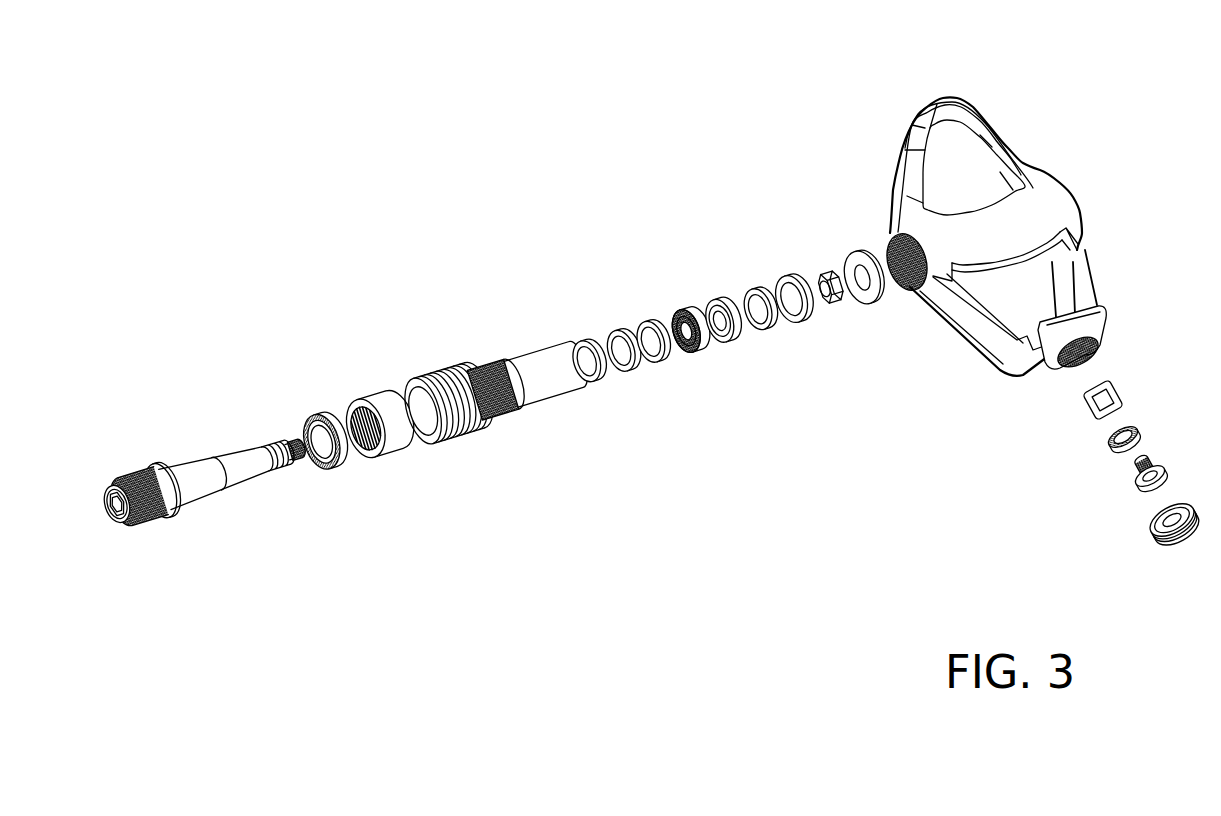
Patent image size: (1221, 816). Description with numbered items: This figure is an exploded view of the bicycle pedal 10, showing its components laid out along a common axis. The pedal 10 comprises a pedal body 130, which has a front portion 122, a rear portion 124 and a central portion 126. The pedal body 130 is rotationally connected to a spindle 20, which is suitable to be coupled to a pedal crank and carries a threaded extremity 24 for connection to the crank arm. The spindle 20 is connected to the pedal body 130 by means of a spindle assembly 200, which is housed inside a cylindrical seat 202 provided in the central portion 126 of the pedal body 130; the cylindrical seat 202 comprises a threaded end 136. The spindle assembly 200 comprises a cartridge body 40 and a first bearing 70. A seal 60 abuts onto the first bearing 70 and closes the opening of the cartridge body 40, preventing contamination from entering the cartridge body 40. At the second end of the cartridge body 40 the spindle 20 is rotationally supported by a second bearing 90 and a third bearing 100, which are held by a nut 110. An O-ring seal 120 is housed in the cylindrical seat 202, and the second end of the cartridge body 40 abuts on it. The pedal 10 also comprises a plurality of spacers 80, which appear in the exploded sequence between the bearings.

The bicycle pedal 10 is at (1003, 290).
The spindle 20 is at (247, 468).
The threaded extremity 24 is at (150, 470).
The cartridge body 40 is at (530, 380).
The seal 60 is at (328, 468).
The first bearing 70 is at (397, 437).
The spacers 80 is at (620, 330).
The second bearing 90 is at (693, 357).
The third bearing 100 is at (727, 292).
The nut 110 is at (833, 307).
The O-ring seal 120 is at (863, 303).
The front portion 122 is at (955, 105).
The rear portion 124 is at (1113, 323).
The central portion 126 is at (1035, 198).
The pedal body 130 is at (1090, 256).
The threaded end 136 is at (885, 258).
The spindle assembly 200 is at (636, 254).
The cylindrical seat 202 is at (900, 292).